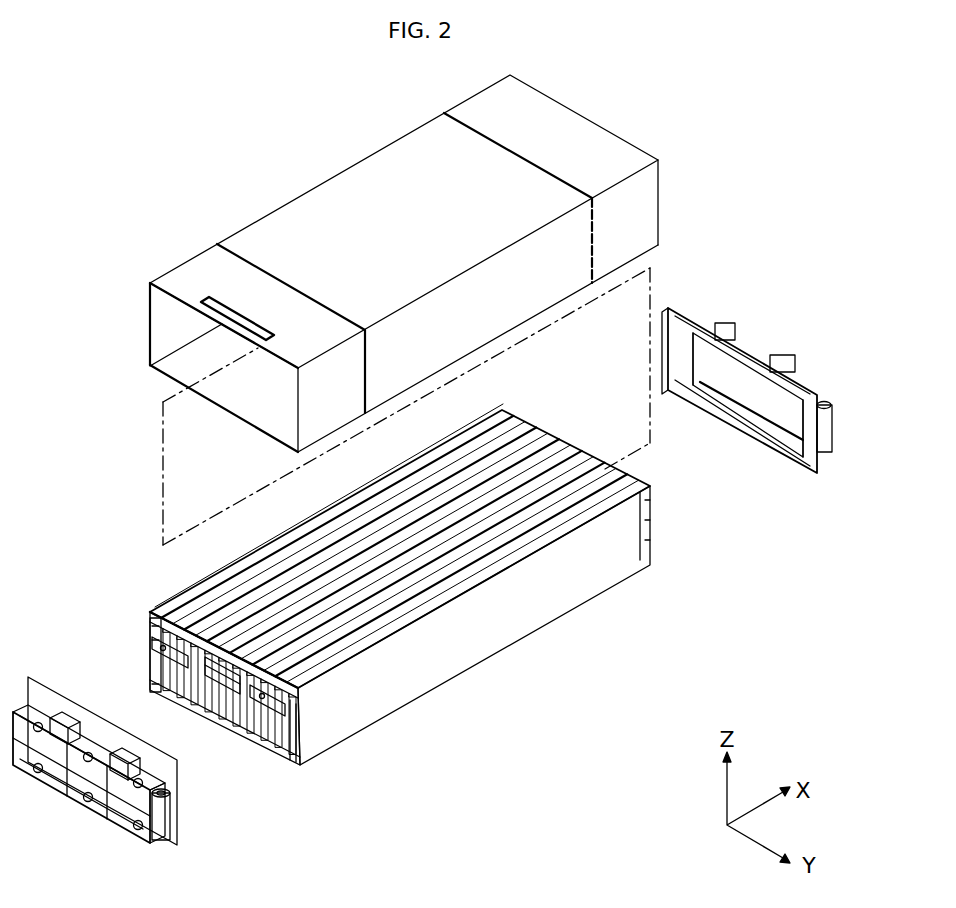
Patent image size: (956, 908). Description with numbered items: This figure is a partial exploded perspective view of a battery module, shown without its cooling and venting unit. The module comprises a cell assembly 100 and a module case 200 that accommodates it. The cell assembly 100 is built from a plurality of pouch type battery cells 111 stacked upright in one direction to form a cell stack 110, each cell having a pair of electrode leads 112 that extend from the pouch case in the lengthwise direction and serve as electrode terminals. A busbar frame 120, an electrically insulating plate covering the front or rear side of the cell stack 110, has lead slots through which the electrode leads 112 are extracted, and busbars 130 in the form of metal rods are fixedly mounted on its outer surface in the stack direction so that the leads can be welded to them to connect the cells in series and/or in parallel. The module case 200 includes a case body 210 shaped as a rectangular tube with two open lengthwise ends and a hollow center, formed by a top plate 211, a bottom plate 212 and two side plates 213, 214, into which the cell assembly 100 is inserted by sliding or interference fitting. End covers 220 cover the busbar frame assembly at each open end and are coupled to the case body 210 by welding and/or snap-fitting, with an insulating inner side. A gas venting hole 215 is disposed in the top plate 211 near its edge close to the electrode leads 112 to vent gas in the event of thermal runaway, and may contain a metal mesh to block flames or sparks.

The cell assembly 100 is at (543, 415).
The cell stack 110 is at (397, 492).
The battery cell 111 is at (196, 612).
The electrode lead 112 is at (158, 672).
The busbar frame 120 is at (290, 760).
The busbar 130 is at (178, 705).
The module case 200 is at (606, 780).
The case body 210 is at (302, 177).
The top plate 211 is at (260, 237).
The bottom plate 212 is at (180, 372).
The side plate 213 is at (162, 315).
The side plate 214 is at (645, 210).
The gas venting hole 215 is at (222, 310).
The end cover 220 is at (97, 805).